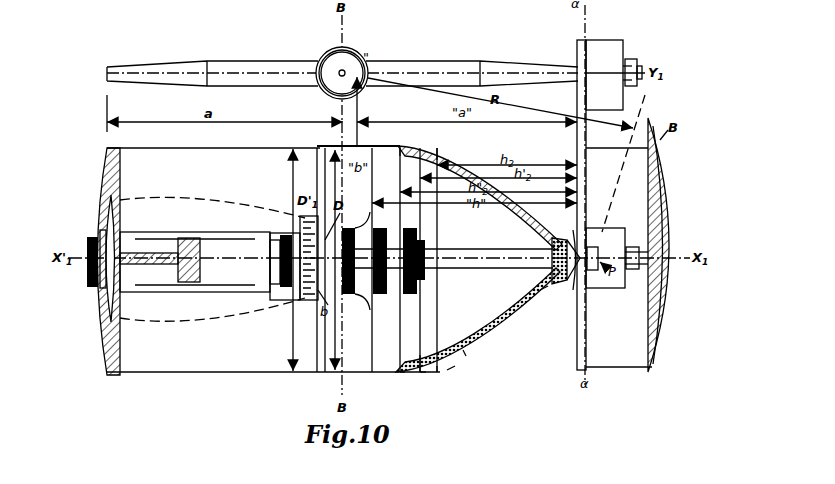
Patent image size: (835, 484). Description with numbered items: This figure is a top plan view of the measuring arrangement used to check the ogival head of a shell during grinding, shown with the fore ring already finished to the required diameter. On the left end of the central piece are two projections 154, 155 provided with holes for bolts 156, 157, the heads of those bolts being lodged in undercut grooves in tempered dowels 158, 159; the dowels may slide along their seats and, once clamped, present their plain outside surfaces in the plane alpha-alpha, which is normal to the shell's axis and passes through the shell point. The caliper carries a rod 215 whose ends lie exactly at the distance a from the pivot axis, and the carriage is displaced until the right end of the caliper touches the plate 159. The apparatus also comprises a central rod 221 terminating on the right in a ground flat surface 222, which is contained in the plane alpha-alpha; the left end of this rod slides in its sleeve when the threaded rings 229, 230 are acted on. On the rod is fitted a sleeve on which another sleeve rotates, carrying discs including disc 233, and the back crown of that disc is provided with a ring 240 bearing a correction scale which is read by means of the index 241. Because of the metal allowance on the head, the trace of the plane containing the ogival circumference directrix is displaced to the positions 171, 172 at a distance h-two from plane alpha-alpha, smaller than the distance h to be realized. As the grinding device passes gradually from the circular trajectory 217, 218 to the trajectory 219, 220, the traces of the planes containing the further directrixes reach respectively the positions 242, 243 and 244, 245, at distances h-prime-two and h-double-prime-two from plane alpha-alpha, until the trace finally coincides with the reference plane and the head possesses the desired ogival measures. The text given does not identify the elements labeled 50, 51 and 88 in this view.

The photoelectric cells 50 is at (383, 261).
The tube 51 is at (200, 262).
The reflector band 88 is at (463, 351).
The projection 154 is at (618, 243).
The projection 155 is at (620, 46).
The bolt 156 is at (636, 292).
The bolt 157 is at (640, 75).
The tempered dowel 158 is at (586, 272).
The tempered dowel 159 is at (576, 88).
The displaced trace position 171 is at (438, 374).
The displaced trace position 172 is at (438, 148).
The rod 215 is at (342, 73).
The circular trajectory 217 is at (447, 370).
The circular trajectory 218 is at (528, 328).
The circular trajectory 219 is at (418, 360).
The circular trajectory 220 is at (525, 305).
The central rod 221 is at (487, 252).
The ground flat surface 222 is at (576, 240).
The threaded ring 229 is at (90, 278).
The threaded ring 230 is at (283, 230).
The disc 233 is at (300, 217).
The ring 240 is at (302, 305).
The index 241 is at (287, 298).
The directrix-plane trace position 242 is at (421, 375).
The directrix-plane trace position 243 is at (422, 147).
The directrix-plane trace position 244 is at (401, 376).
The directrix-plane trace position 245 is at (399, 147).